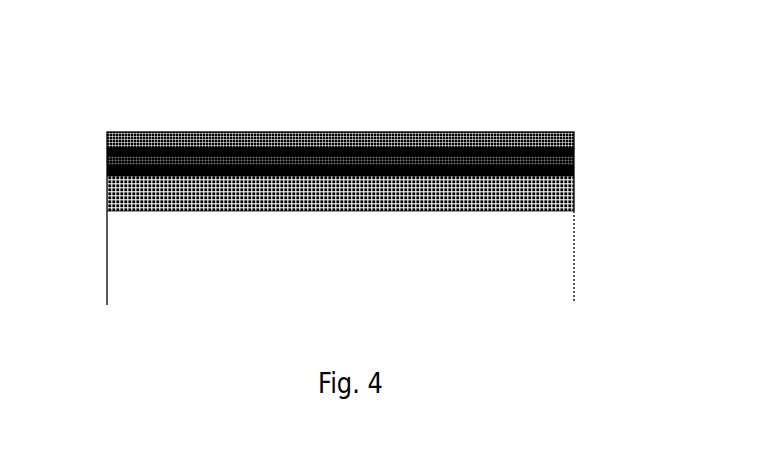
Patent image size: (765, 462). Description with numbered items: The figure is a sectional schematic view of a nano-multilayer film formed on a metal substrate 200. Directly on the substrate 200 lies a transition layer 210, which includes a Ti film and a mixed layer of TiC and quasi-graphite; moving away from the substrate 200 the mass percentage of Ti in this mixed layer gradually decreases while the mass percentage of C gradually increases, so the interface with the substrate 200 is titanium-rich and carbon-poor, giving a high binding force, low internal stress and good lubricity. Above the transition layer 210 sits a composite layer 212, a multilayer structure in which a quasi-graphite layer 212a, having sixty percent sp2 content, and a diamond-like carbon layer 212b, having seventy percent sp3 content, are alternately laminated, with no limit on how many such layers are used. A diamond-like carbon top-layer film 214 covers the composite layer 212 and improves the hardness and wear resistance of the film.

The substrate 200 is at (340, 258).
The transition layer 210 is at (562, 195).
The composite layer 212 is at (352, 158).
The quasi-graphite layer 212a is at (370, 164).
The diamond-like carbon layer 212b is at (563, 141).
The diamond-like carbon top-layer film 214 is at (558, 131).